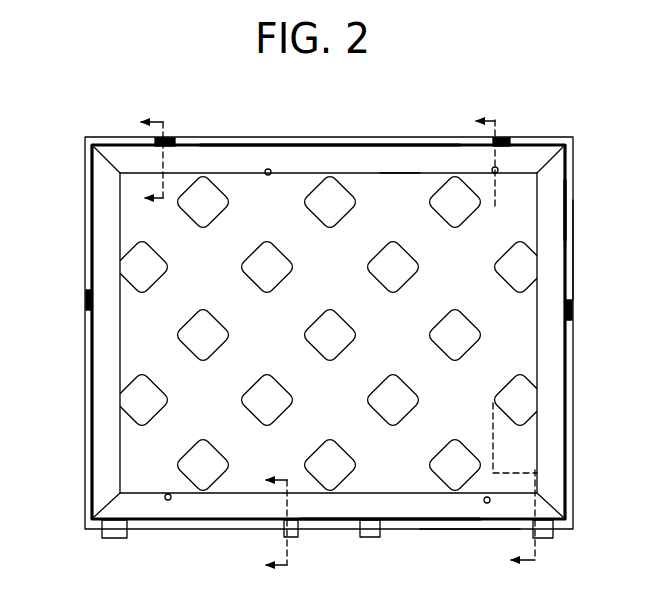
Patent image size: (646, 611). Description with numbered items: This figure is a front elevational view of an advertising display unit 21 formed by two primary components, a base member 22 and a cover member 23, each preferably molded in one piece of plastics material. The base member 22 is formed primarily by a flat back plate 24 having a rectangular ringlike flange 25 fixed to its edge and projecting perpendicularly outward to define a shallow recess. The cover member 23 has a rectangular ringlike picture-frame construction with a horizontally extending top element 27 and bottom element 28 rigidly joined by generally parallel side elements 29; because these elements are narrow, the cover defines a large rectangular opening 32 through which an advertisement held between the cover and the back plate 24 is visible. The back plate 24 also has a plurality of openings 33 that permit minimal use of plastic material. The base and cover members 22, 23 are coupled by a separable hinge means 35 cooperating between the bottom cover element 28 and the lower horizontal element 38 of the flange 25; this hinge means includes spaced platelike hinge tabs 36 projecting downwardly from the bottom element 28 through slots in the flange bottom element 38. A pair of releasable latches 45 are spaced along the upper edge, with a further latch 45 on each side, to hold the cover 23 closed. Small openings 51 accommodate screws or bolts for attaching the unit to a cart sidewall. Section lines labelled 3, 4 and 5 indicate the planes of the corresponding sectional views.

The advertising display unit 21 is at (580, 413).
The base member 22 is at (576, 252).
The cover member 23 is at (527, 343).
The back plate 24 is at (331, 334).
The ringlike flange 25 is at (318, 137).
The top element 27 is at (397, 163).
The bottom element 28 is at (395, 507).
The side elements 29 is at (552, 212).
The rectangular opening 32 is at (258, 172).
The openings 33 is at (284, 251).
The separable hinge means 35 is at (128, 537).
The hinge tabs 36 is at (366, 540).
The flange bottom element 38 is at (472, 530).
The releasable latches 45 is at (168, 134).
The small openings 51 is at (174, 501).
The section line 3- 3 is at (496, 346).
The section line 4- 4 is at (152, 162).
The section line 5- 5 is at (263, 524).